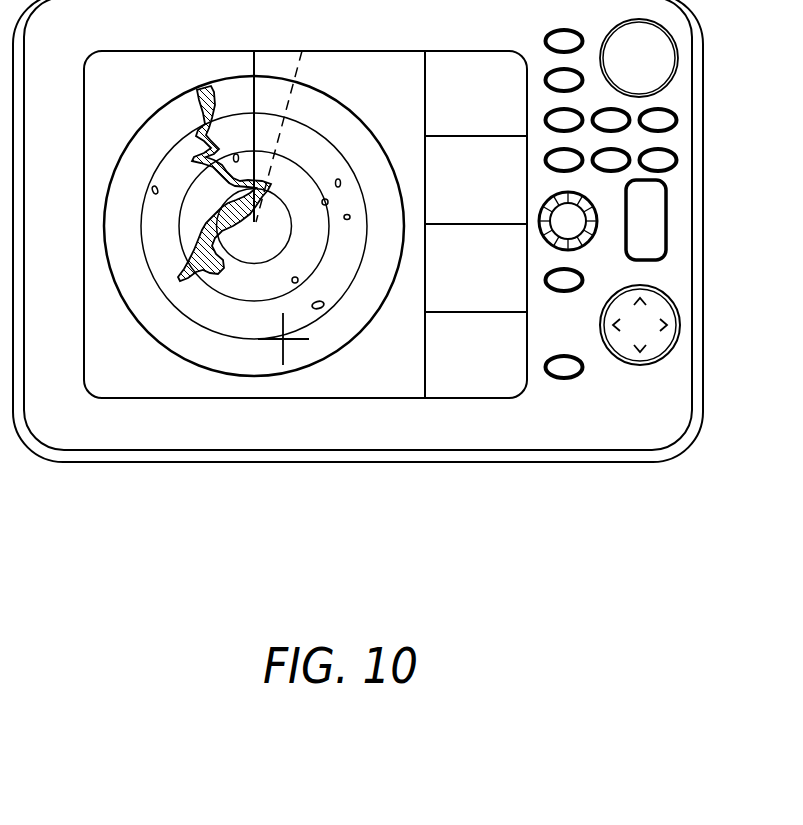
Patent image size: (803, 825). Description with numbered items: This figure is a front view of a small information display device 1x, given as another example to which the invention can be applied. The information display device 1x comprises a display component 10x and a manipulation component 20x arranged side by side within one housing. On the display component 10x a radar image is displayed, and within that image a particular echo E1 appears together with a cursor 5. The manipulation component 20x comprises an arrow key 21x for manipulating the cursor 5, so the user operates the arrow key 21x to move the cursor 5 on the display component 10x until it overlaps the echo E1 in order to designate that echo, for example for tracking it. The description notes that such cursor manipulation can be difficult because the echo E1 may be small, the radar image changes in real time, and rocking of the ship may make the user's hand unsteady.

The information display device 1x is at (77, 478).
The display component 10x is at (217, 400).
The manipulation component 20x is at (649, 272).
The arrow key 21x is at (660, 345).
The echo E1 is at (325, 306).
The cursor 5 is at (295, 353).